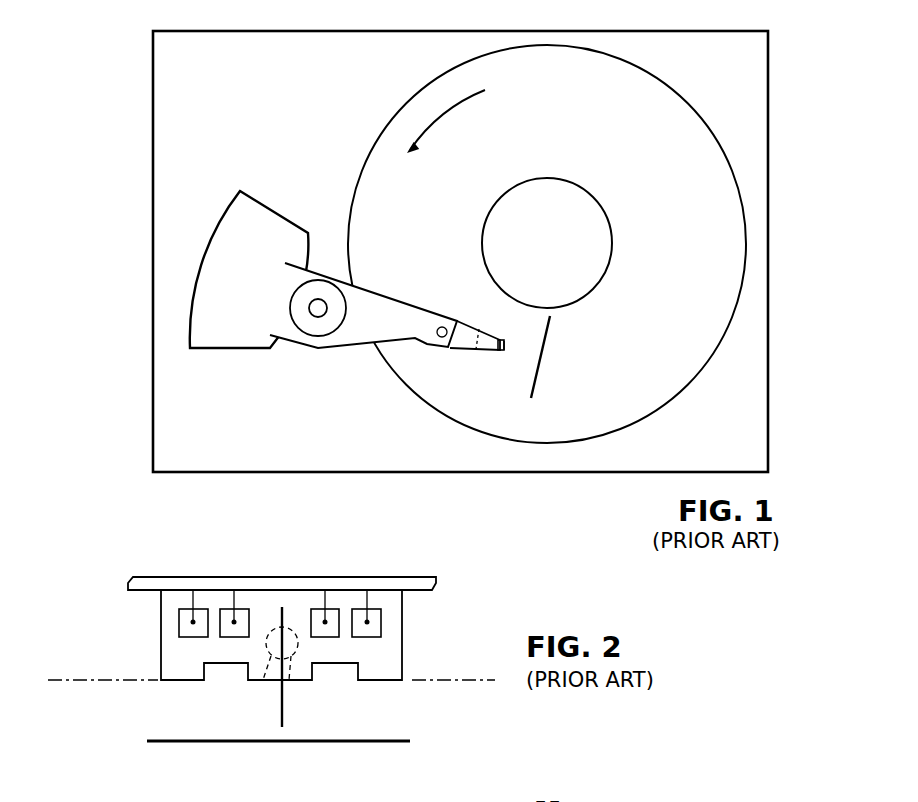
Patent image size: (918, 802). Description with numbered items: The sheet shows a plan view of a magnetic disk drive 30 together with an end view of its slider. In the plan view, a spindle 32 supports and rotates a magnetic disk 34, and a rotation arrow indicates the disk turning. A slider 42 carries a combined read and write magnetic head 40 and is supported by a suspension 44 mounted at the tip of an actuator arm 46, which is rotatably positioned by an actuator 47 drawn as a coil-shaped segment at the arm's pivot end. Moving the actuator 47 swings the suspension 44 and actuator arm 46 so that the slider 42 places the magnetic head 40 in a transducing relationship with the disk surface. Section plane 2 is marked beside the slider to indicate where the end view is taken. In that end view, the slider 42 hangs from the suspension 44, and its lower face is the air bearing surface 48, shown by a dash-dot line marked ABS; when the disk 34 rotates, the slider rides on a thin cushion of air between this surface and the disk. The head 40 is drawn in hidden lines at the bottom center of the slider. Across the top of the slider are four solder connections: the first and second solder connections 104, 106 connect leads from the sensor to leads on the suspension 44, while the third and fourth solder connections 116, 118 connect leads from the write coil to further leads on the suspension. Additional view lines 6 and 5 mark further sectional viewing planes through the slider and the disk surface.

In FIG. 1, the magnetic disk drive 30 is at (790, 64).
In FIG. 1, the spindle 32 is at (577, 185).
In FIG. 1, the magnetic disk 34 is at (692, 263).
In FIG. 1, the magnetic head 40 is at (507, 353).
In FIG. 2, the magnetic head 40 is at (263, 680).
In FIG. 1, the slider 42 is at (502, 341).
In FIG. 2, the slider 42 is at (160, 620).
In FIG. 1, the suspension 44 is at (465, 350).
In FIG. 1, the actuator arm 46 is at (403, 304).
In FIG. 1, the actuator 47 is at (280, 218).
In FIG. 2, the air bearing surface 48 is at (79, 682).
In FIG. 2, the first solder connection 104 is at (179, 617).
In FIG. 2, the third solder connection 116 is at (221, 617).
In FIG. 2, the fourth solder connection 118 is at (312, 610).
In FIG. 2, the second solder connection 106 is at (354, 610).
In FIG. 1, the plane 2— 2 is at (560, 326).
In FIG. 2, the section line 6- 6 is at (290, 616).
In FIG. 2, the section line 5- 5 is at (168, 750).